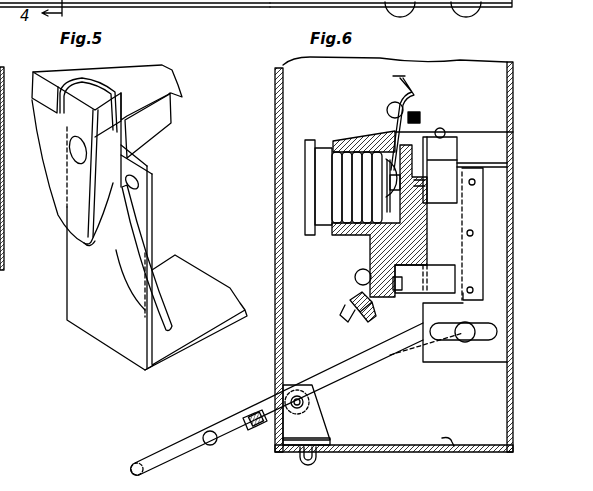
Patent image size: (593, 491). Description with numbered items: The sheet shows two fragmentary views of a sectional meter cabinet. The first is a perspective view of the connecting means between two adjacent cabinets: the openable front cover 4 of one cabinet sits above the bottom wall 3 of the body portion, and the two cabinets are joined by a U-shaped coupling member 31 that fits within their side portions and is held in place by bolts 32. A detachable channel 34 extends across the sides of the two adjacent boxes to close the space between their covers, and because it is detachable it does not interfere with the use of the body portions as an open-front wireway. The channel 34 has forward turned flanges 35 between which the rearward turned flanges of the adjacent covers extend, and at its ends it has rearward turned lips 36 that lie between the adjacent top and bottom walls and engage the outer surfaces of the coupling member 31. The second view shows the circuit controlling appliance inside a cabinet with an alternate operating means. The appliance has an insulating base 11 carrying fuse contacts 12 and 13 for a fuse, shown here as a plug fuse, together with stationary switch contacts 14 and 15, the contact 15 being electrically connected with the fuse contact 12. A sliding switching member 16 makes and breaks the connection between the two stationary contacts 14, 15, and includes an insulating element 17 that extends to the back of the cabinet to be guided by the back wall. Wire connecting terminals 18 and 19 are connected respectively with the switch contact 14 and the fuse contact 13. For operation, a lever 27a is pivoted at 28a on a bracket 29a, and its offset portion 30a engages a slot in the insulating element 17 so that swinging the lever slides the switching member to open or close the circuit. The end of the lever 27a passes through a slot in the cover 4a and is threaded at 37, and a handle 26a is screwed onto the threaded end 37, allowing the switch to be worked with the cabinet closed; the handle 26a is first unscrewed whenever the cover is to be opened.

In FIG. 5, the openable front cover 4 is at (55, 70).
In FIG. 5, the forward turned flanges 35 is at (93, 92).
In FIG. 5, the detachable channel 34 is at (118, 142).
In FIG. 5, the bottom wall 3 is at (48, 146).
In FIG. 5, the bolts 32 is at (76, 160).
In FIG. 6, the bolts 32 is at (416, 18).
In FIG. 5, the rearward turned lips 36 is at (106, 247).
In FIG. 5, the U-shaped coupling member 31 is at (157, 270).
In FIG. 6, the U-shaped coupling member 31 is at (488, 341).
In FIG. 6, the cover 4a is at (276, 114).
In FIG. 6, the end plate P is at (305, 180).
In FIG. 6, the insulating base 11 is at (378, 134).
In FIG. 6, the fuse contact 13 is at (350, 141).
In FIG. 6, the fuse contact 12 is at (378, 218).
In FIG. 6, the wire connecting terminal 19 is at (396, 104).
In FIG. 6, the stationary switch contact 15 is at (452, 146).
In FIG. 6, the sliding switching member 16 is at (450, 246).
In FIG. 6, the stationary switch contact 14 is at (437, 287).
In FIG. 6, the wire connecting terminal 18 is at (348, 305).
In FIG. 6, the insulating element 17 is at (423, 325).
In FIG. 6, the offset portion 30a is at (465, 343).
In FIG. 6, the lever 27a is at (377, 379).
In FIG. 6, the handle 26a is at (164, 475).
In FIG. 6, the threaded end 37 is at (250, 416).
In FIG. 6, the pivot 28a is at (297, 396).
In FIG. 6, the bracket 29a is at (322, 426).